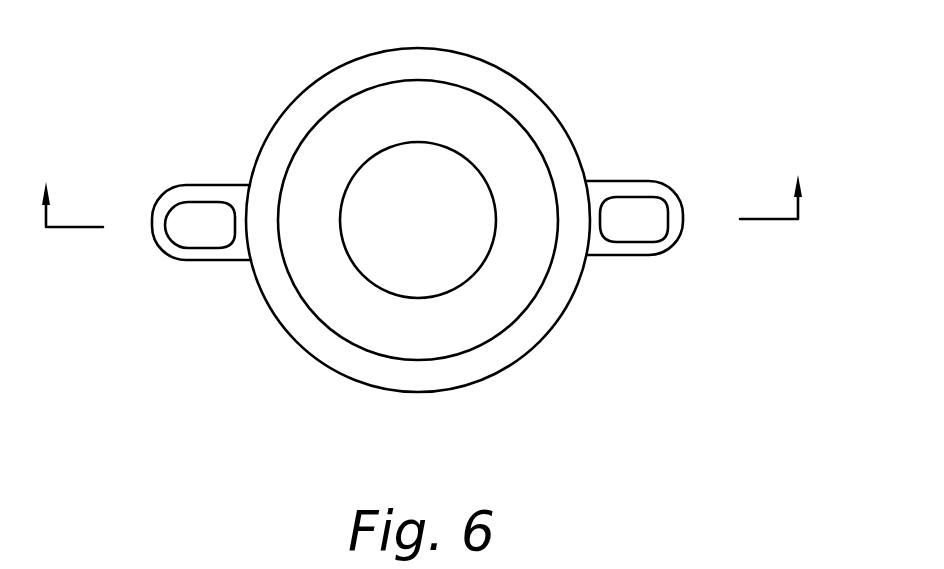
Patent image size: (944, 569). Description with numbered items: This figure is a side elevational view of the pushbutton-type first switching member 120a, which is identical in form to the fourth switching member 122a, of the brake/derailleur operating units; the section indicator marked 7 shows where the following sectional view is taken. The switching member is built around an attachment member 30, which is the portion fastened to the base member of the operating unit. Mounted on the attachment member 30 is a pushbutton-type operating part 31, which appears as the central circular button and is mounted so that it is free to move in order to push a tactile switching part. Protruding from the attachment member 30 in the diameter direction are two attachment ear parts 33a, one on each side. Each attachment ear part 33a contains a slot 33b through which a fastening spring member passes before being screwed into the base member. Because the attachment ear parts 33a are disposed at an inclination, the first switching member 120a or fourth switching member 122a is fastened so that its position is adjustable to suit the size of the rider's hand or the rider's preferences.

The first switching member 120a is at (556, 62).
The fourth switching member 122a is at (430, 220).
The attachment member 30 is at (597, 258).
The operating part 31 is at (397, 347).
The attachment ear parts 33a is at (192, 193).
The slot 33b is at (205, 248).
The section line for FIG. 7 is at (422, 175).